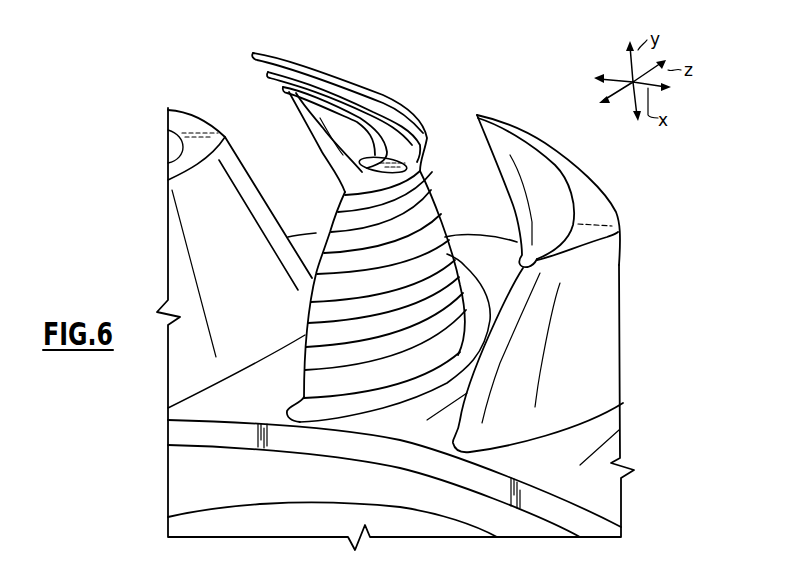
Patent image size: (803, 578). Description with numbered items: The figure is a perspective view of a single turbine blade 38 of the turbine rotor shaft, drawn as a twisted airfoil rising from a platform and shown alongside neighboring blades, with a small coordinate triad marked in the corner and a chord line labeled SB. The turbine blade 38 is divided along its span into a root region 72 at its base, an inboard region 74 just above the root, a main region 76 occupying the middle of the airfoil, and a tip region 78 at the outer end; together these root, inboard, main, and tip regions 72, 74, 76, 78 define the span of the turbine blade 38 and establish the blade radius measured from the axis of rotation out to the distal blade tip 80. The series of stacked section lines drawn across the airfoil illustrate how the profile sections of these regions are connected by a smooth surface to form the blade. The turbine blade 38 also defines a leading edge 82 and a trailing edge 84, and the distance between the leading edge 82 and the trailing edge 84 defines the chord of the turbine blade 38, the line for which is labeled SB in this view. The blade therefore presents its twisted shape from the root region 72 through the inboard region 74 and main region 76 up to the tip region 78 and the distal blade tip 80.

The turbine blade 38 is at (413, 97).
The splitter blade SB is at (317, 74).
The root region 72 is at (305, 385).
The inboard region 74 is at (308, 338).
The main region 76 is at (318, 312).
The tip region 78 is at (335, 222).
The distal blade tip 80 is at (360, 126).
The leading edge 82 is at (307, 362).
The trailing edge 84 is at (298, 110).